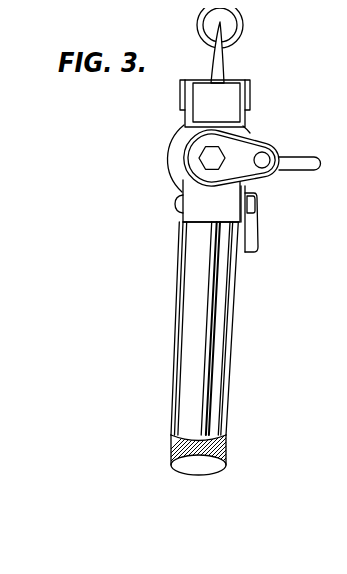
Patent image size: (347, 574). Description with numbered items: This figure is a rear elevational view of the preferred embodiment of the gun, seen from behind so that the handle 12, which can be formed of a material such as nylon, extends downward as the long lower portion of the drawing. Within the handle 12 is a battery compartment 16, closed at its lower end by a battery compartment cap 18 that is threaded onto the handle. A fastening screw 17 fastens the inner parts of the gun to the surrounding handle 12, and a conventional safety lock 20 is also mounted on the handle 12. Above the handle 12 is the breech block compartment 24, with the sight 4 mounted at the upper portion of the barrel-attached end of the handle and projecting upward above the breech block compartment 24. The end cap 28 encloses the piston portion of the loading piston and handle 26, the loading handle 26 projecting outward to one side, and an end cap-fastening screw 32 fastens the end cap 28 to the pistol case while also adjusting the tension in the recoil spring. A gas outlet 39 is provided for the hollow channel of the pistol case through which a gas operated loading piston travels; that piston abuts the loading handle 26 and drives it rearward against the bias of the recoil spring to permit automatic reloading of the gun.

The sight 4 is at (225, 62).
The breech block compartment 24 is at (245, 83).
The end cap 28 is at (200, 176).
The fastening screw 17 is at (177, 207).
The gas outlet 39 is at (265, 153).
The end cap-fastening screw 32 is at (200, 153).
The loading piston and handle 26 is at (298, 172).
The safety lock 20 is at (258, 221).
The handle 12 is at (197, 328).
The battery compartment 16 is at (212, 365).
The battery compartment cap 18 is at (170, 452).